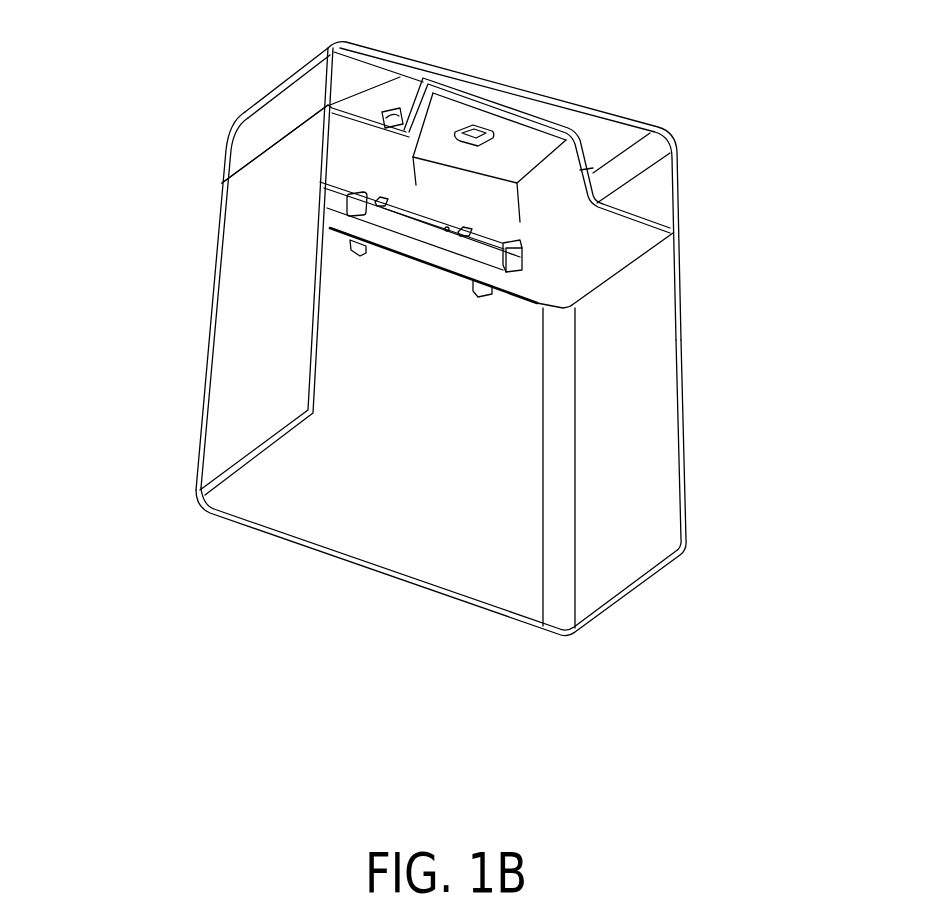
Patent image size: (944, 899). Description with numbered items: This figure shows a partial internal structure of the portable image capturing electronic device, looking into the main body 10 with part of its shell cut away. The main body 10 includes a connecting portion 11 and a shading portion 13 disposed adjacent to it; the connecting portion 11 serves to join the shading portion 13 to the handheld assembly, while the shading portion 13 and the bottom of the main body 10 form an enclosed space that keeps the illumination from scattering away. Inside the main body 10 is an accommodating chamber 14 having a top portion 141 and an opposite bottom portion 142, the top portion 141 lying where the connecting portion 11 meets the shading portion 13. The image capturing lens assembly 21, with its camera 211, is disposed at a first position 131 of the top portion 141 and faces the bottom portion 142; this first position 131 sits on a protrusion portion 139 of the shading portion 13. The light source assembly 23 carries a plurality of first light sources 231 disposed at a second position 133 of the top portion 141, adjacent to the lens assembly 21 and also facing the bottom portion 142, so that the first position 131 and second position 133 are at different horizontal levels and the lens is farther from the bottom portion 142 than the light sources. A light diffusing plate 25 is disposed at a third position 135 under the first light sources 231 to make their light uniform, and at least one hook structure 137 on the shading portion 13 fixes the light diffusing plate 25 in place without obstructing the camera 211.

The main body 10 is at (80, 152).
The connecting portion 11 is at (253, 125).
The shading portion 13 is at (478, 198).
The accommodating chamber 14 is at (536, 339).
The top portion 141 is at (703, 220).
The bottom portion 142 is at (700, 577).
The first position 131 is at (572, 126).
The second position 133 is at (526, 229).
The third position 135 is at (504, 256).
The hook structure 137 is at (362, 250).
The protrusion portion 139 is at (423, 98).
The image capturing lens assembly 21 is at (533, 128).
The camera 211 is at (473, 130).
The light source assembly 23 is at (474, 232).
The first light sources 231 is at (378, 208).
The light diffusing plate 25 is at (480, 262).